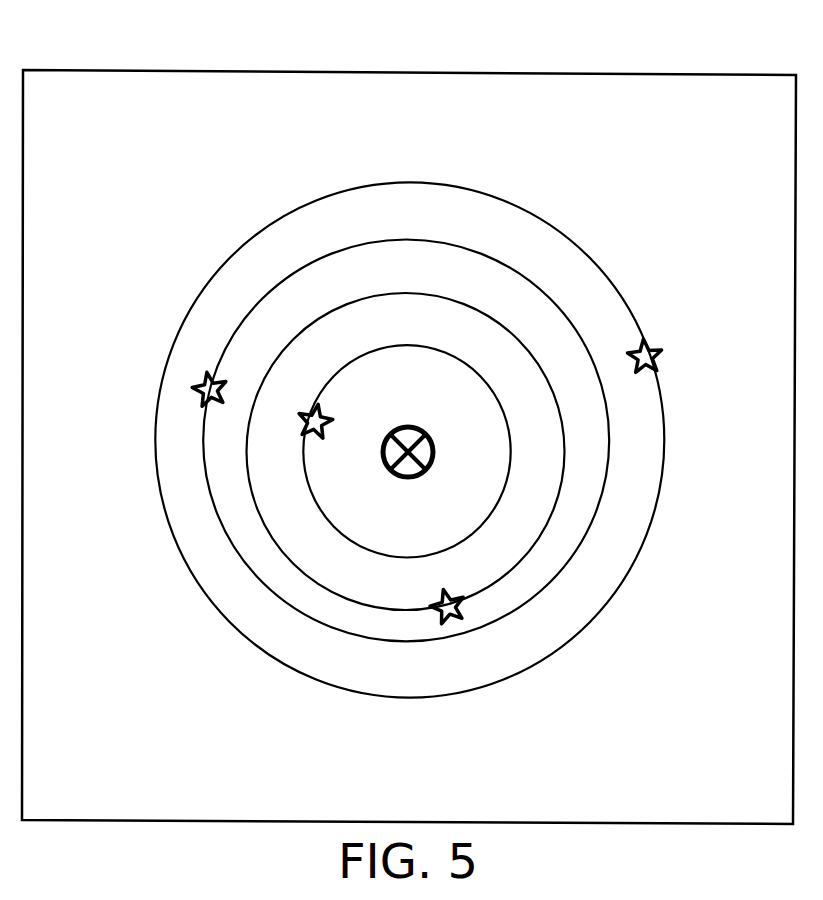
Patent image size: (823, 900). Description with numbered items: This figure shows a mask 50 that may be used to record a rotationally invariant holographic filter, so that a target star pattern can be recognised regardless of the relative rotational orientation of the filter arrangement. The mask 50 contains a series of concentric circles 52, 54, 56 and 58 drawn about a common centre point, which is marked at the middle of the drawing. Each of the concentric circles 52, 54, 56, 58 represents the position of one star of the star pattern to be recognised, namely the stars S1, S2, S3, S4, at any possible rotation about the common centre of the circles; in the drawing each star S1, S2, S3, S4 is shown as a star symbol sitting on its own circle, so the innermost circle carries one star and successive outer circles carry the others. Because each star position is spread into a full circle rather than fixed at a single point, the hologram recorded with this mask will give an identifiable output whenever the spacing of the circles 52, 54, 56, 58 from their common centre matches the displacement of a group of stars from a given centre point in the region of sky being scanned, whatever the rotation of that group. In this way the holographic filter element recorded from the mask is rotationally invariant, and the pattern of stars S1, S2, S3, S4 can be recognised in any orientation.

The display screen 50 is at (742, 66).
The concentric circle 52 is at (396, 338).
The concentric circle 54 is at (445, 286).
The concentric circle 56 is at (496, 245).
The concentric circle 58 is at (565, 218).
The star S1 is at (198, 398).
The star S2 is at (301, 430).
The star S3 is at (431, 594).
The star S4 is at (638, 371).